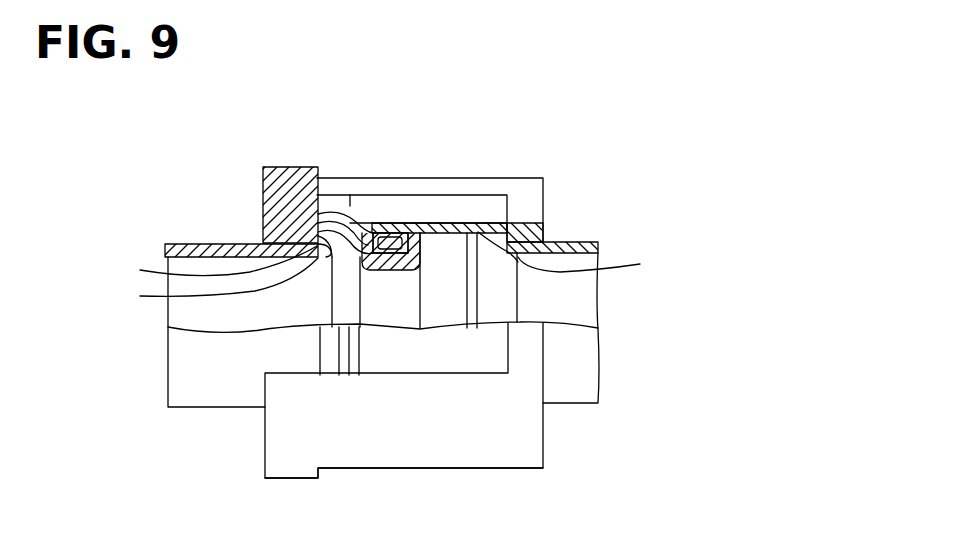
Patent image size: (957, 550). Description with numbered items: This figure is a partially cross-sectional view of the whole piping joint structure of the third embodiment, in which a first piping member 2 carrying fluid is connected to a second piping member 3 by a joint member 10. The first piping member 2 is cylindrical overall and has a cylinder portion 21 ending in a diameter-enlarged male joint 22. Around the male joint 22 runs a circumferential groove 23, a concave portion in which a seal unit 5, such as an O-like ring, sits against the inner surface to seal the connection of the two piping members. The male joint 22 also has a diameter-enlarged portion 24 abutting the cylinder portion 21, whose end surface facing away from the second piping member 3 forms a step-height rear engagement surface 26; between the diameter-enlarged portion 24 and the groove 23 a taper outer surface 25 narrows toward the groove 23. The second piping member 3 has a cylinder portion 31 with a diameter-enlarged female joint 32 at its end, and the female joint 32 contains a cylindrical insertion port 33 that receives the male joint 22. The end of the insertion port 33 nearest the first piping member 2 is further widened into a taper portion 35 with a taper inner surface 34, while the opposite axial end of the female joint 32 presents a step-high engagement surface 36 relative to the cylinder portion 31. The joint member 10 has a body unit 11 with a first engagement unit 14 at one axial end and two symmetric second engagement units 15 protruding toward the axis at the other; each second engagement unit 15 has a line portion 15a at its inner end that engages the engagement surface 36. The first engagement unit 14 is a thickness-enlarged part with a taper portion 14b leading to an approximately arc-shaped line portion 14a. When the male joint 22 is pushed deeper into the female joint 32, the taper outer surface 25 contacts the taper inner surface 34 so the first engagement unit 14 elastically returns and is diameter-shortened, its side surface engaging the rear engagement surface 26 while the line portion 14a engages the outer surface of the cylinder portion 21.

The first piping member 2 is at (179, 233).
The second piping member 3 is at (577, 233).
The seal unit 5 is at (390, 250).
The joint member 10 is at (405, 178).
The body unit 11 is at (365, 185).
The first engagement unit 14 is at (272, 166).
The line portion 14a is at (208, 283).
The taper portion 14b is at (207, 264).
The second engagement unit 15 is at (522, 200).
The line portion 15a is at (604, 263).
The cylinder portion 21 is at (208, 243).
The male joint 22 is at (433, 260).
The groove 23 is at (372, 271).
The diameter-enlarged portion 24 is at (327, 205).
The taper outer surface 25 is at (318, 250).
The rear engagement surface 26 is at (318, 242).
The cylinder portion 31 is at (573, 385).
The female joint 32 is at (418, 223).
The insertion port 33 is at (478, 232).
The taper inner surface 34 is at (378, 232).
The taper portion 35 is at (352, 210).
The engagement surface 36 is at (525, 240).